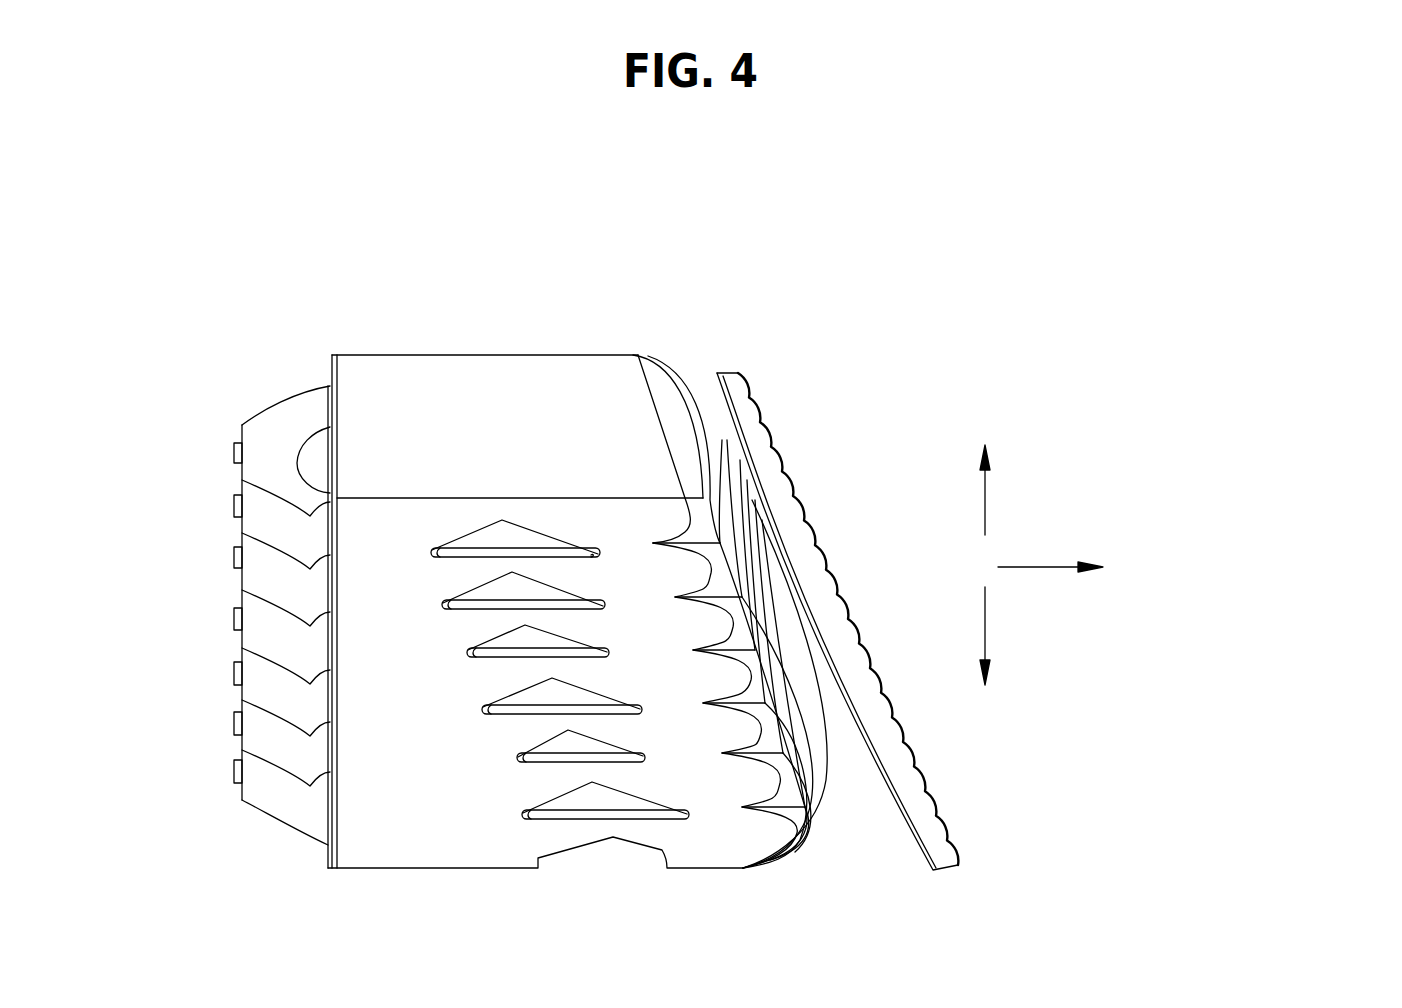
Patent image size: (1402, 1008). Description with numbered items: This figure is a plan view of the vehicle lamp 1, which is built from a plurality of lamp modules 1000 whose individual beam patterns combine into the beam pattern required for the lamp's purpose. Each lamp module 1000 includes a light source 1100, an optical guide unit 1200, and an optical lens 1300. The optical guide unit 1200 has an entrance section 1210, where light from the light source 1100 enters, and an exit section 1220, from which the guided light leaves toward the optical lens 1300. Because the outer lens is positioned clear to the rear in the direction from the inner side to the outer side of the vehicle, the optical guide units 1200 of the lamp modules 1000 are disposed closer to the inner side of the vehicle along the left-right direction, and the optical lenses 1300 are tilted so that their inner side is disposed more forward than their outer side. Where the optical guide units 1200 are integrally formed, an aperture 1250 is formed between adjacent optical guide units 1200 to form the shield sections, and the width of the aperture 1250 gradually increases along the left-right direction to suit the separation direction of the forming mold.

The vehicle lamp 1 is at (852, 178).
The lamp module 1000 is at (190, 466).
The light source 1100 is at (232, 447).
The optical guide unit 1200 is at (547, 343).
The entrance section 1210 is at (266, 388).
The exit section 1220 is at (703, 390).
The aperture 1250 is at (466, 548).
The optical lens 1300 is at (783, 500).